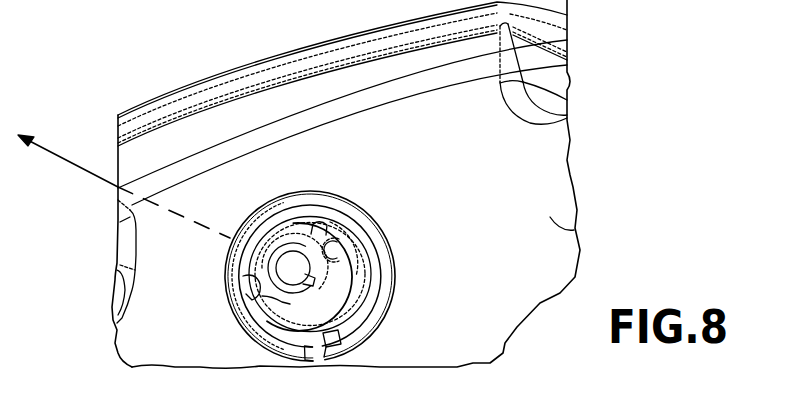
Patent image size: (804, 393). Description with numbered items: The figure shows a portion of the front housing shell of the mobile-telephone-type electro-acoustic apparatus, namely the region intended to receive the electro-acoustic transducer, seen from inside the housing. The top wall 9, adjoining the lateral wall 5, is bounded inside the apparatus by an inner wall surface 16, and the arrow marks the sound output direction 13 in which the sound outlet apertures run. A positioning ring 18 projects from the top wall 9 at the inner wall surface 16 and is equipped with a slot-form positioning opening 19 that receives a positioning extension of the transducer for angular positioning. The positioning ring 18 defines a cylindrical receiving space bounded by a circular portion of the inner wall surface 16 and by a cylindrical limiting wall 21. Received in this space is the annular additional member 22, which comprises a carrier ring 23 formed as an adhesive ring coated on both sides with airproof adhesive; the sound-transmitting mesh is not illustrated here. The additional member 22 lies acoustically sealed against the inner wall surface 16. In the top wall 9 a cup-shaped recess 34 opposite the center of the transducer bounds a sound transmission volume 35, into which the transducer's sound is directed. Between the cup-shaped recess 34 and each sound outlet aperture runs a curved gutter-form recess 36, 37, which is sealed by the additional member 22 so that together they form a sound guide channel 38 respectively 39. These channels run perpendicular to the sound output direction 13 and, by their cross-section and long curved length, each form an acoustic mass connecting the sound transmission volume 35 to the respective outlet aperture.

The lateral wall 5 is at (273, 64).
The top wall 9 is at (567, 161).
The sound output direction 13 is at (70, 161).
The inner wall surface 16 is at (574, 232).
The positioning ring 18 is at (290, 207).
The positioning opening 19 is at (340, 350).
The cylindrical limiting wall 21 is at (364, 278).
The annular additional member 22 is at (341, 310).
The carrier ring 23 is at (348, 262).
The cup-shaped recess 34 is at (320, 276).
The sound transmission volume 35 is at (292, 268).
The gutter-form recess 36 is at (326, 236).
The gutter-form recess 37 is at (278, 300).
The sound guide channel 38 is at (350, 218).
The sound guide channel 39 is at (282, 296).